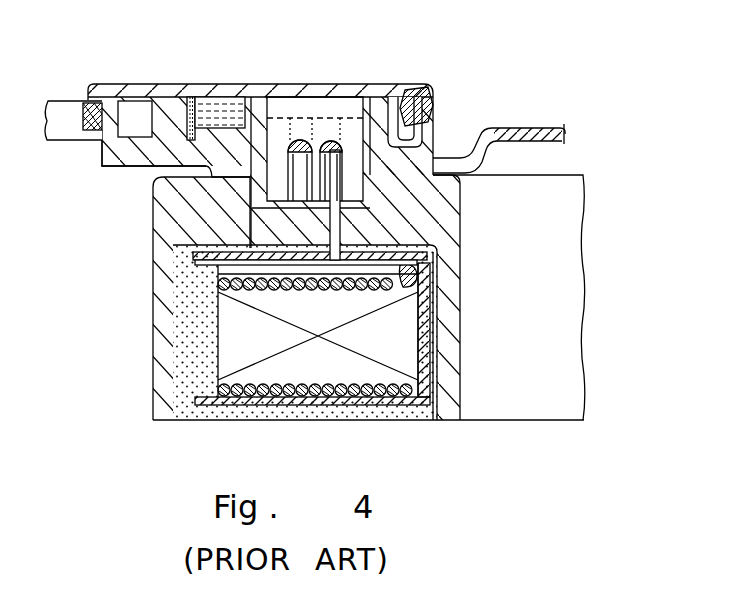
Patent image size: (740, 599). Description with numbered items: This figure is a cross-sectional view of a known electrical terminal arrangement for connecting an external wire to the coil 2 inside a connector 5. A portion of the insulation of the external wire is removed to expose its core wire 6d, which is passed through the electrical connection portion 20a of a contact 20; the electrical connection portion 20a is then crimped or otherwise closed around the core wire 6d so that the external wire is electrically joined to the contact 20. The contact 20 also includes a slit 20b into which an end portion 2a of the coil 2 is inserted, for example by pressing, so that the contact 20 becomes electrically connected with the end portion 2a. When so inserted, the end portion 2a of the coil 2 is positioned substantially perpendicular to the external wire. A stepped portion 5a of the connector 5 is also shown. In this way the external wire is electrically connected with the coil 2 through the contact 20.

The coil 2 is at (242, 352).
The end portion of coil 2a is at (338, 178).
The connector 5 is at (410, 74).
The housing step portion 5a is at (104, 170).
The core wire 6d is at (46, 100).
The contact 20 is at (331, 97).
The electrical connection portion 20a is at (219, 97).
The slit 20b is at (340, 247).